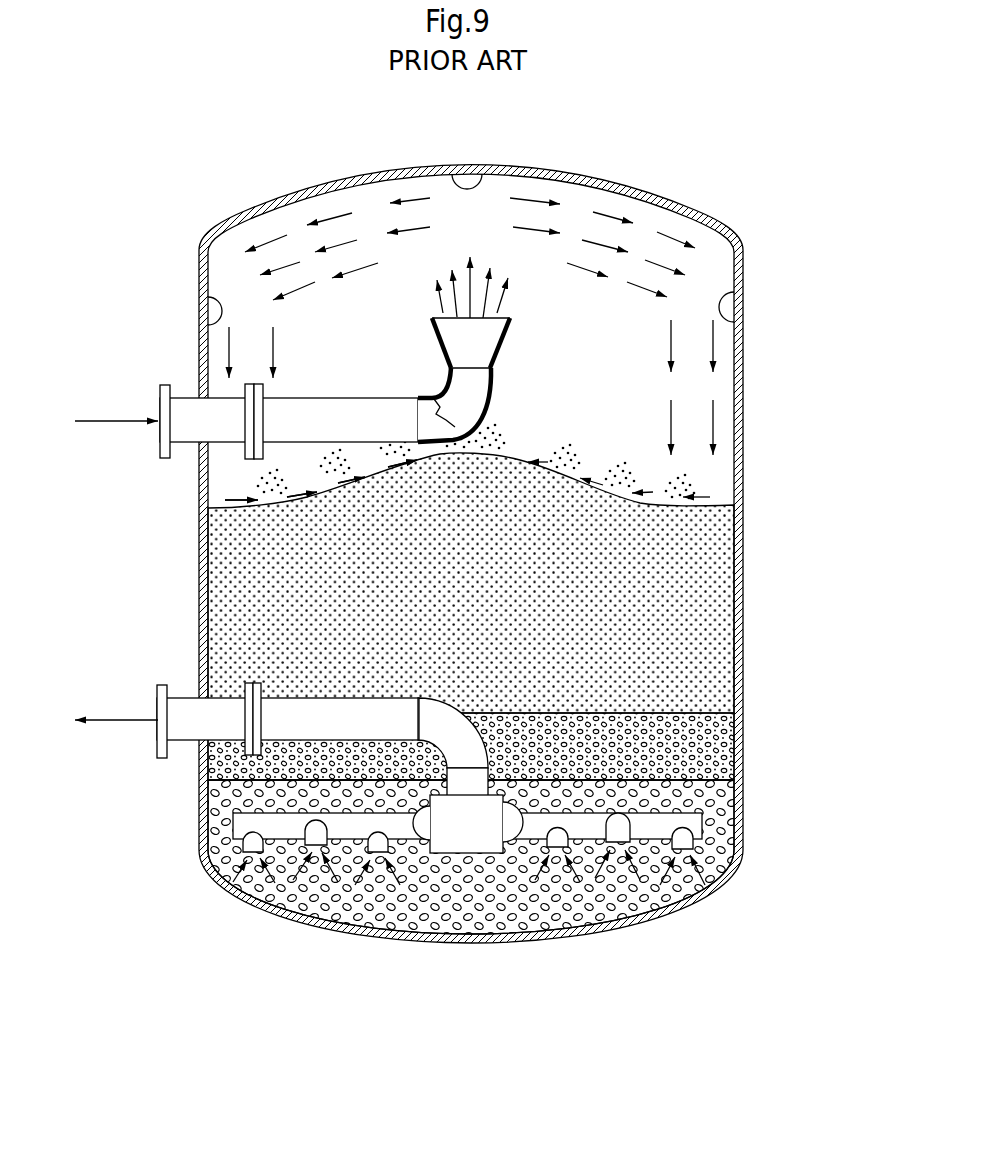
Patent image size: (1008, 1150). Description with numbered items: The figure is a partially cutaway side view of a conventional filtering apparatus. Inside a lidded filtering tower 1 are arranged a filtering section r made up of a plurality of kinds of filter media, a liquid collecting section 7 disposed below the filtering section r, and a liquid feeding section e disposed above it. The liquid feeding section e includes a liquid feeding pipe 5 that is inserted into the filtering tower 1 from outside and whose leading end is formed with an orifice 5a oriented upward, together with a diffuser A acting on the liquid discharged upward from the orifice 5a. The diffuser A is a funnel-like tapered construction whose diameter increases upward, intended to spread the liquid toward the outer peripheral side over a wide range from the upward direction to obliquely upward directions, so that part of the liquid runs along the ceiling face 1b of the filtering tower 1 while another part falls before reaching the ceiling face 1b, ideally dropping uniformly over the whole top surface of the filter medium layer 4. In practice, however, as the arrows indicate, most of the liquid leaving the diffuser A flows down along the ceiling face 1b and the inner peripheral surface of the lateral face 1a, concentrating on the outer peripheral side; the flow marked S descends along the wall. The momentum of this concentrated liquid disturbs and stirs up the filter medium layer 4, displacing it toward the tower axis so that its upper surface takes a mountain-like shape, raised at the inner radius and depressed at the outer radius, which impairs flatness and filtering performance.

The filtering tower 1 is at (647, 190).
The lateral face 1a is at (205, 328).
The ceiling face 1b is at (483, 172).
The filter medium layer 4 is at (517, 465).
The liquid feeding pipe 5 is at (341, 397).
The orifice 5a is at (472, 370).
The liquid collecting section 7 is at (293, 830).
The diffuser A is at (512, 322).
The liquid feeding section e is at (402, 365).
The downflow of fluid S is at (649, 378).
The filtering section r is at (707, 670).